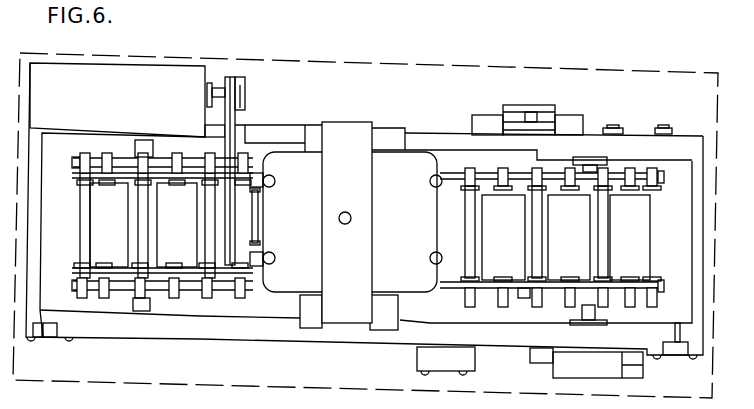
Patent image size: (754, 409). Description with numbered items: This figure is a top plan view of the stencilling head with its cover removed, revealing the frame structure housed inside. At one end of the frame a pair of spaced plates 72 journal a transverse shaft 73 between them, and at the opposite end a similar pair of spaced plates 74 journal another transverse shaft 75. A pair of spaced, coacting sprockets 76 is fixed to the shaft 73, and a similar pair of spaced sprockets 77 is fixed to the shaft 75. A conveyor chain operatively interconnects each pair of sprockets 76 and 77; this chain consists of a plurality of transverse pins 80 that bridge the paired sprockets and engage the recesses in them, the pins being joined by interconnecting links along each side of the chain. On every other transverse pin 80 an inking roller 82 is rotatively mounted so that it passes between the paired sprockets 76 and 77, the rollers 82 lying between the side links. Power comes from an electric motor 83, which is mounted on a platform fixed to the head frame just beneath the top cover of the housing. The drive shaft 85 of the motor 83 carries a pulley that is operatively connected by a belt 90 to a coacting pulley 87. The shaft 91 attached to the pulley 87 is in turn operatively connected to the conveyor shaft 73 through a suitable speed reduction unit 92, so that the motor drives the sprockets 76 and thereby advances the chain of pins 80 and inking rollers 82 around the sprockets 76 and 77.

The spaced plates 72 is at (118, 135).
The shaft 73 is at (148, 142).
The spaced plates 74 is at (643, 153).
The transverse shaft 75 is at (590, 160).
The sprockets 76 is at (77, 161).
The sprockets 77 is at (663, 180).
The transverse pins 80 is at (500, 308).
The inking roller 82 is at (627, 239).
The electric motor 83 is at (402, 225).
The drive shaft 85 is at (253, 219).
The pulley 87 is at (240, 78).
The belt 90 is at (232, 133).
The shaft 91 is at (216, 90).
The speed reduction unit 92 is at (165, 80).